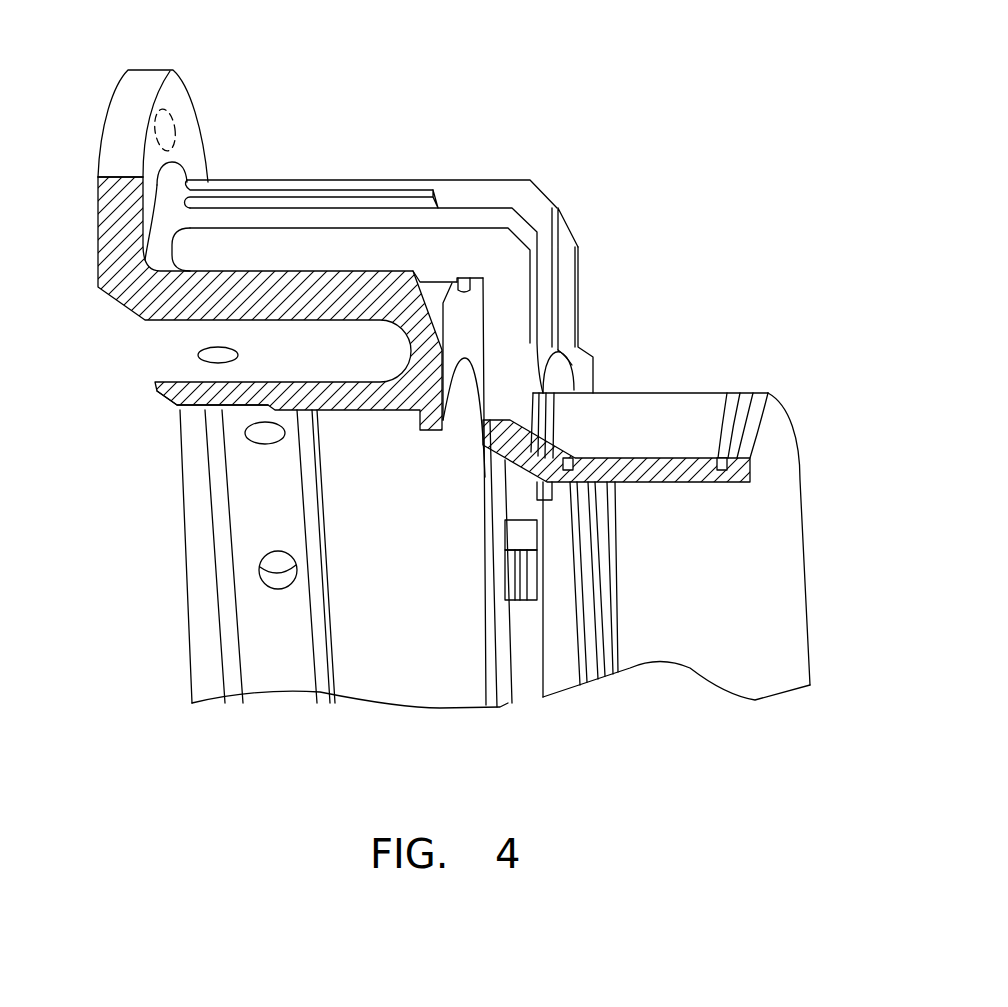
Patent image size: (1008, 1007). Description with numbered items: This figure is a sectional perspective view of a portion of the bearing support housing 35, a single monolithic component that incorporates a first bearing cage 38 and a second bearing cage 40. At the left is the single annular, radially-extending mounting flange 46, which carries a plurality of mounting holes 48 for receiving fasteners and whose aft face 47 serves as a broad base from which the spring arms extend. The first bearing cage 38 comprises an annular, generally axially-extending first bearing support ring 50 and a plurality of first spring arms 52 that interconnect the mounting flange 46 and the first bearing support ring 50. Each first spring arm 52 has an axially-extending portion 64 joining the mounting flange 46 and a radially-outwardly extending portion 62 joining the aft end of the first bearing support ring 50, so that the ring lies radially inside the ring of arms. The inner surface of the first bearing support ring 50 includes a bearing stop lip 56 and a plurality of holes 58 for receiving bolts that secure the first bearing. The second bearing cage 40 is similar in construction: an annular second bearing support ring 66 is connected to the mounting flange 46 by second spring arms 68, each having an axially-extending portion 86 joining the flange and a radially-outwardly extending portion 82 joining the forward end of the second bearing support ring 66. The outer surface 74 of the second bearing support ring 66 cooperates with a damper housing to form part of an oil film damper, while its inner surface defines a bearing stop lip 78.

The bearing support housing 35 is at (666, 82).
The first bearing cage 38 is at (126, 435).
The second bearing cage 40 is at (644, 290).
The mounting flange 46 is at (148, 75).
The aft face 47 is at (202, 145).
The mounting holes 48 is at (175, 110).
The first bearing support ring 50 is at (173, 400).
The first spring arms 52 is at (296, 266).
The bearing stop lip 56 is at (421, 425).
The holes 58 is at (277, 578).
The radially-outwardly extending portion 62 is at (423, 362).
The axially-extending portion 64 is at (247, 293).
The second bearing support ring 66 is at (773, 410).
The second spring arms 68 is at (561, 180).
The outer surface 74 is at (702, 400).
The bearing stop lip 78 is at (550, 493).
The radially-outwardly extending portion 82 is at (517, 290).
The axially-extending portion 86 is at (447, 247).